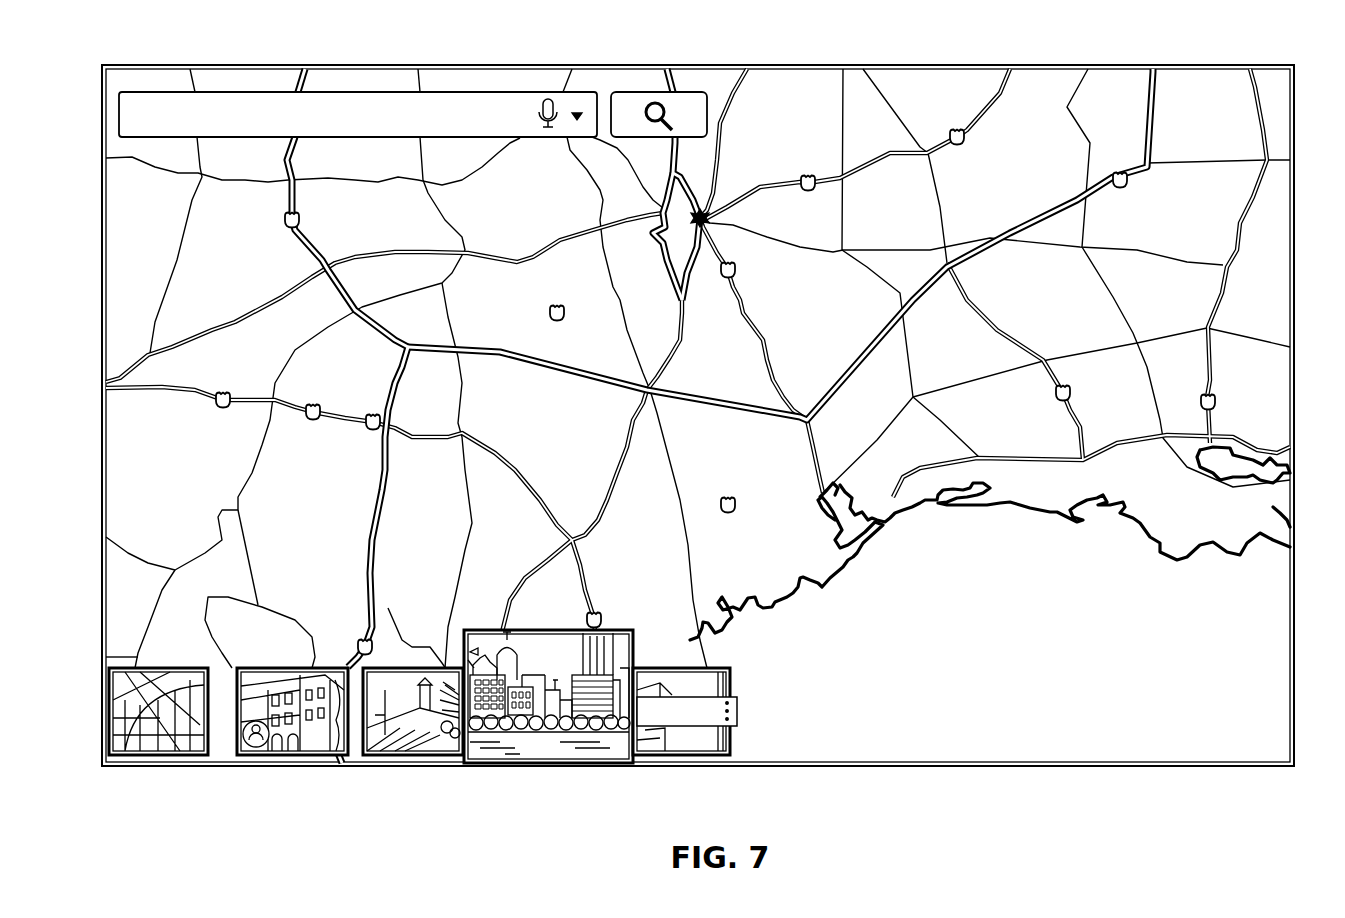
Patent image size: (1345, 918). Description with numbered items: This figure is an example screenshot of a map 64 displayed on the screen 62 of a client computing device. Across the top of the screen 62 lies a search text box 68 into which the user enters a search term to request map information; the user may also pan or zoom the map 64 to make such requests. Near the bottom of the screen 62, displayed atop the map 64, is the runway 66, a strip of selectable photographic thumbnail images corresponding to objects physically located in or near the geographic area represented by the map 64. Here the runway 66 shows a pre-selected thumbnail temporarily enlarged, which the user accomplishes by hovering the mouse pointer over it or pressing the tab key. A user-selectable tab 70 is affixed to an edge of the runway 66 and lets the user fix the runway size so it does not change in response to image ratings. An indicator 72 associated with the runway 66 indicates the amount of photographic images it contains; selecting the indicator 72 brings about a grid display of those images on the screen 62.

The screen 62 is at (1201, 66).
The map 64 is at (938, 83).
The runway 66 is at (228, 785).
The search text box 68 is at (253, 115).
The user-selectable tab 70 is at (740, 708).
The indicator 72 is at (728, 716).